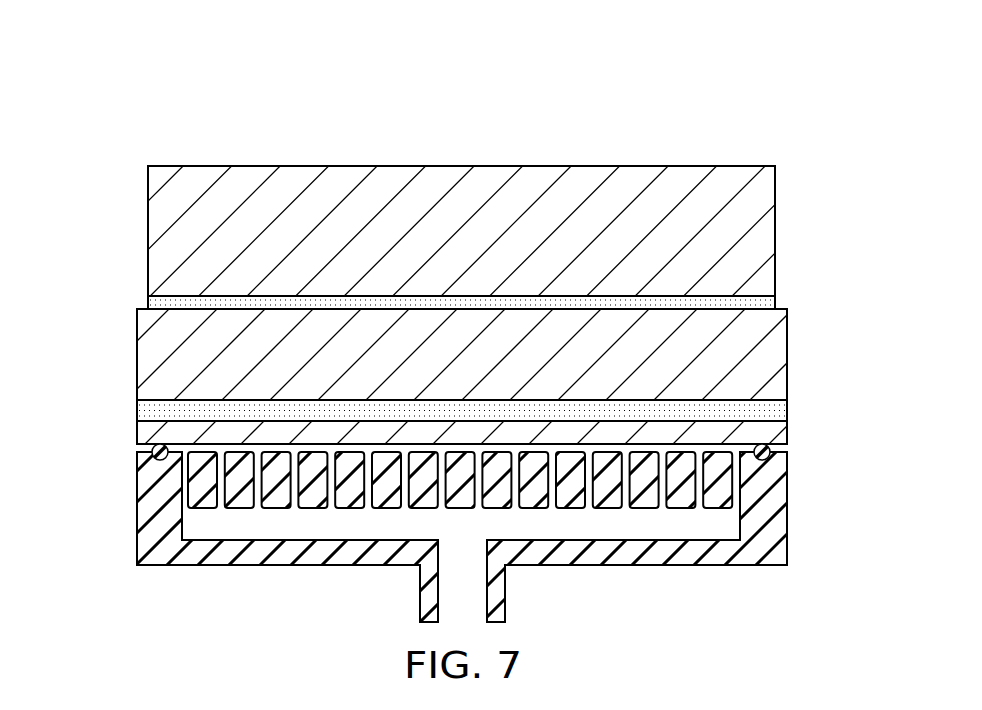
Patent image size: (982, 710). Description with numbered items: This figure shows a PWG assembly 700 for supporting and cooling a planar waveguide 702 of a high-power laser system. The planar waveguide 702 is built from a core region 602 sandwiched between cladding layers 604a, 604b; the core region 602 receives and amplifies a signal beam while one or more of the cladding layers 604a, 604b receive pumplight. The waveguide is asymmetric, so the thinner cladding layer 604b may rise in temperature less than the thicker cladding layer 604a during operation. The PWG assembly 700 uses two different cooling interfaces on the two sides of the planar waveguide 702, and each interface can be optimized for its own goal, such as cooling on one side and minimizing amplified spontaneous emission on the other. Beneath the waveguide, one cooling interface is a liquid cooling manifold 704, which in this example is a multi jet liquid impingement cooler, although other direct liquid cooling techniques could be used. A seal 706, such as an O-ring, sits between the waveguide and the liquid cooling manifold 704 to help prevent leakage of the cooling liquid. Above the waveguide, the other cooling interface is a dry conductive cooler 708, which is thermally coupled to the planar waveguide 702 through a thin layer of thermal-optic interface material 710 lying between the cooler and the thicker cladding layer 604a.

The PWG assembly 700 is at (665, 122).
The planar waveguide 702 is at (799, 344).
The liquid cooling manifold 704 is at (249, 556).
The seal 706 is at (786, 474).
The dry conductive cooler 708 is at (158, 228).
The thermal-optic interface (TOI) material 710 is at (158, 305).
The core region 602 is at (148, 410).
The cladding layer 604a is at (148, 362).
The cladding layer 604b is at (148, 432).